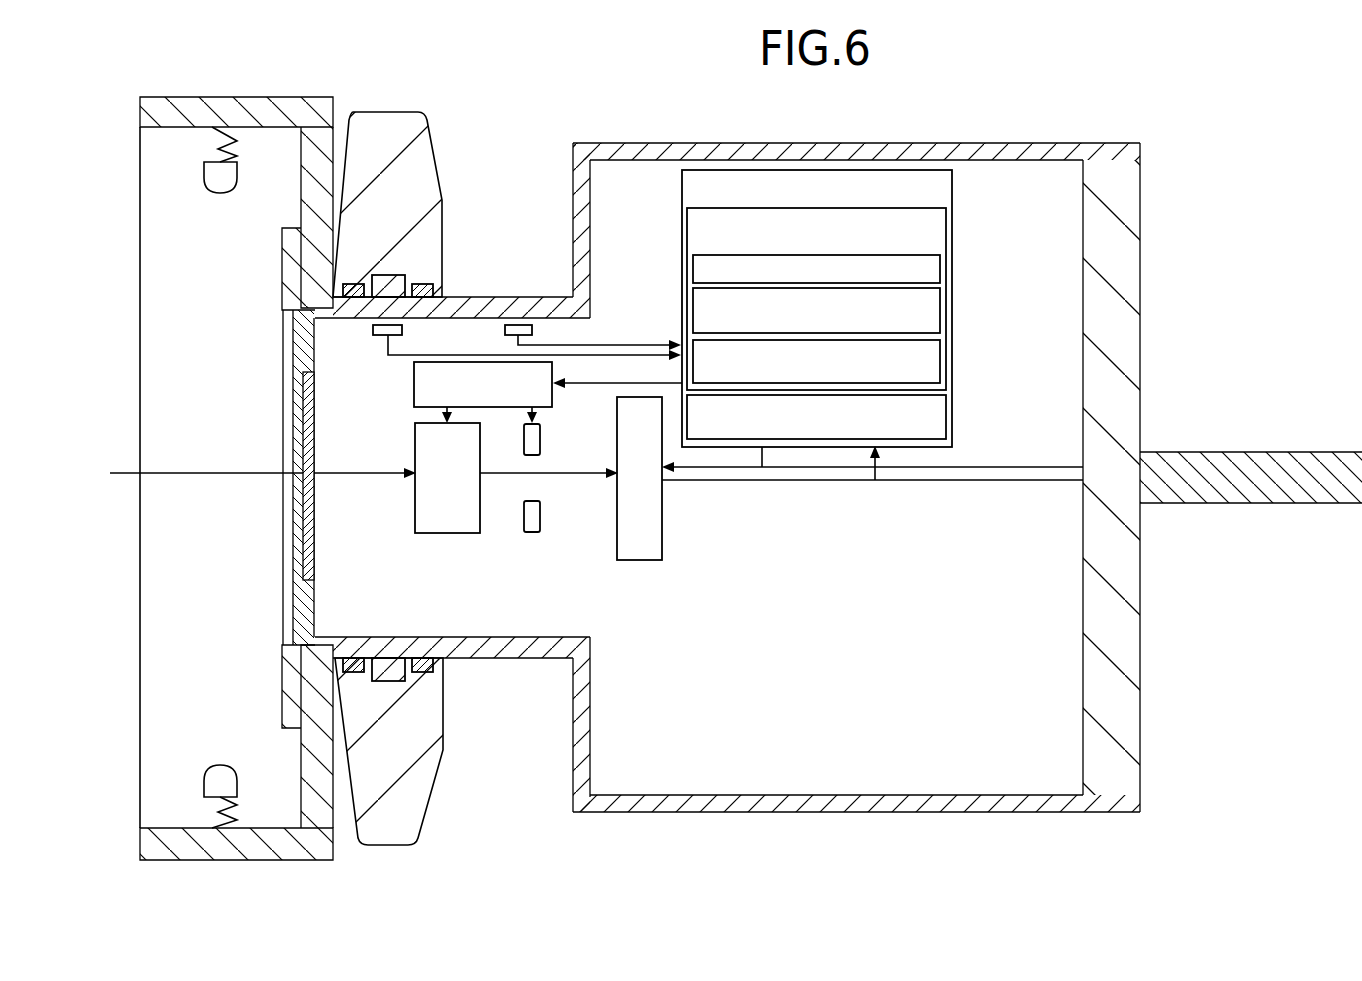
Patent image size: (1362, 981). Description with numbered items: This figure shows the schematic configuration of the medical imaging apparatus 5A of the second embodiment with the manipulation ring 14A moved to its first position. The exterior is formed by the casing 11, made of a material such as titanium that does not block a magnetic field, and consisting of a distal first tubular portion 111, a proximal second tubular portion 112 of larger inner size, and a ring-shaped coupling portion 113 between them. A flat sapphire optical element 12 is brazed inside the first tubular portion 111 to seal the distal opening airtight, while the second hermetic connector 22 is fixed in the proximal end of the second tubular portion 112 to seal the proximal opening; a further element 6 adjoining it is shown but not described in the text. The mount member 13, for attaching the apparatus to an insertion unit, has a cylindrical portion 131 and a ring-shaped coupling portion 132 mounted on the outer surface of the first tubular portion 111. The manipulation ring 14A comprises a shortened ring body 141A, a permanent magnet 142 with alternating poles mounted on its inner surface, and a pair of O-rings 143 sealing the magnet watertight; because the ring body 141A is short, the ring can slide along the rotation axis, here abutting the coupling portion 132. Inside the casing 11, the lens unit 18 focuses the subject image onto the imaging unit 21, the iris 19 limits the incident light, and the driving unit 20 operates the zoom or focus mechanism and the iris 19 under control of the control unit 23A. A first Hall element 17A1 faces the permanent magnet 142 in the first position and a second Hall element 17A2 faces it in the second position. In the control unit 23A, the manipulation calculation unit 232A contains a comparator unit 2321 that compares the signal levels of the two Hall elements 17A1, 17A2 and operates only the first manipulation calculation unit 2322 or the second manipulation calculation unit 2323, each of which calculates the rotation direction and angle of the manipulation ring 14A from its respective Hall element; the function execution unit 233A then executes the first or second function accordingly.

The medical imaging apparatus 5A is at (1195, 94).
The cable 6 is at (1322, 452).
The casing 11 is at (448, 58).
The first tubular portion 111 is at (500, 304).
The second tubular portion 112 is at (598, 154).
The coupling portion 113 is at (577, 184).
The optical element 12 is at (300, 430).
The mount member 13 is at (312, 58).
The cylindrical portion 131 is at (213, 122).
The coupling portion 132 is at (306, 128).
The manipulation ring 14A is at (338, 888).
The ring body 141A is at (425, 775).
The permanent magnet 142 is at (388, 682).
The O-rings 143 is at (353, 674).
The first Hall element 17A1 is at (382, 338).
The second Hall element 17A2 is at (505, 331).
The lens unit 18 is at (440, 534).
The iris 19 is at (531, 534).
The driving unit 20 is at (414, 389).
The imaging unit 21 is at (634, 561).
The second hermetic connector 22 is at (1140, 316).
The control unit 23A is at (953, 190).
The manipulation calculation unit 232A is at (948, 224).
The comparator unit 2321 is at (942, 266).
The first manipulation calculation unit 2322 is at (942, 312).
The second manipulation calculation unit 2323 is at (942, 358).
The function execution unit 233A is at (948, 414).